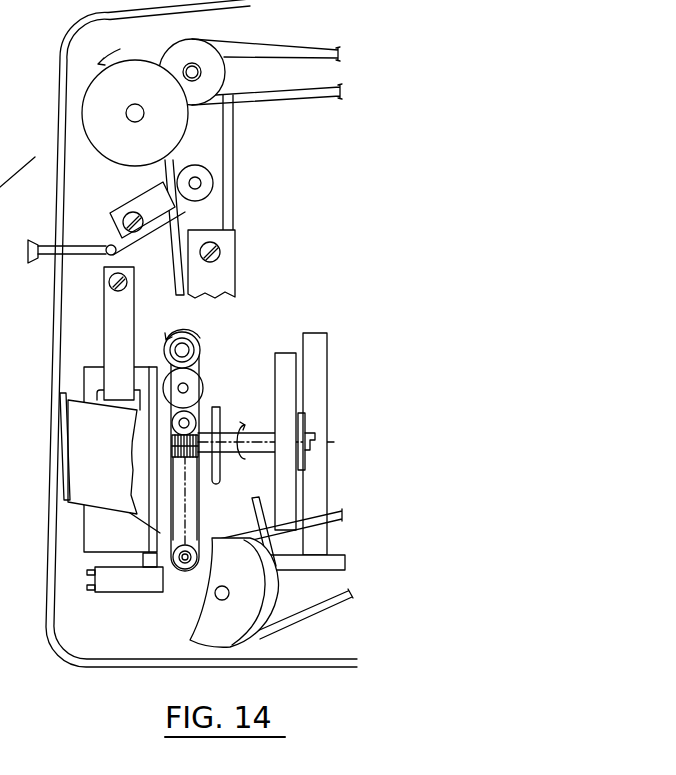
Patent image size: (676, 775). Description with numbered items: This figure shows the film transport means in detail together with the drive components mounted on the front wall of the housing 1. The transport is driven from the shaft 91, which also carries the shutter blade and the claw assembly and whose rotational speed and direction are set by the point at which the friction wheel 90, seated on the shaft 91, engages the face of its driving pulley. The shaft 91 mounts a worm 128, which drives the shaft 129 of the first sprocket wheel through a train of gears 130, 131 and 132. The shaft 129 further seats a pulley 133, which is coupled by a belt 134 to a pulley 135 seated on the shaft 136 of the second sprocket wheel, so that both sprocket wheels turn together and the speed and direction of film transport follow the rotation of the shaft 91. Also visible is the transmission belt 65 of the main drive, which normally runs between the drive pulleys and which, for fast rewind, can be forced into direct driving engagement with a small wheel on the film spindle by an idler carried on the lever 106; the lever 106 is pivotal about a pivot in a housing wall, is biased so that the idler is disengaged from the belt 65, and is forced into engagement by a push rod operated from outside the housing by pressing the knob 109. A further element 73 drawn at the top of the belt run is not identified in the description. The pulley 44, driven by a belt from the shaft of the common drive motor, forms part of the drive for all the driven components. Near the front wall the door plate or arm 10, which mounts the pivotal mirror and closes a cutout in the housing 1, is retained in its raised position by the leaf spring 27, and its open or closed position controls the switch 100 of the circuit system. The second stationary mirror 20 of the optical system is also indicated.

The housing 1 is at (55, 343).
The arm or plate 10 is at (97, 370).
The second stationary mirror 20 is at (75, 493).
The leaf spring 27 is at (127, 313).
The pulley 44 is at (212, 624).
The transmission belt 65 is at (232, 172).
The pulley 73 is at (243, 43).
The wheel 90 is at (220, 425).
The shaft 91 is at (250, 455).
The switch 100 is at (115, 587).
The lever 106 is at (137, 196).
The knob 109 is at (36, 268).
The worm 128 is at (192, 458).
The shaft 129 is at (188, 348).
The gear 130 is at (192, 423).
The gear 131 is at (196, 393).
The gear 132 is at (190, 362).
The pulley 133 is at (200, 333).
The belt 134 is at (200, 536).
The pulley 135 is at (179, 572).
The shaft 136 is at (194, 558).